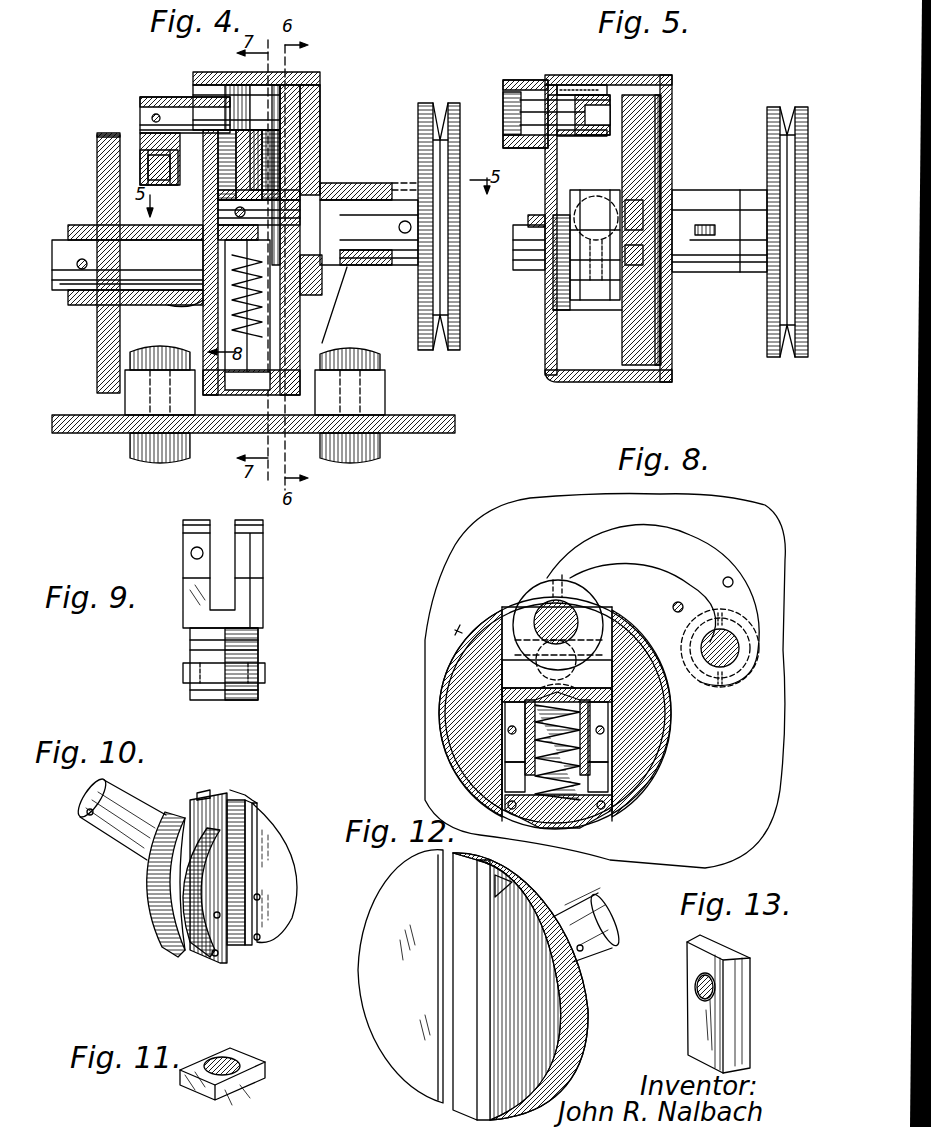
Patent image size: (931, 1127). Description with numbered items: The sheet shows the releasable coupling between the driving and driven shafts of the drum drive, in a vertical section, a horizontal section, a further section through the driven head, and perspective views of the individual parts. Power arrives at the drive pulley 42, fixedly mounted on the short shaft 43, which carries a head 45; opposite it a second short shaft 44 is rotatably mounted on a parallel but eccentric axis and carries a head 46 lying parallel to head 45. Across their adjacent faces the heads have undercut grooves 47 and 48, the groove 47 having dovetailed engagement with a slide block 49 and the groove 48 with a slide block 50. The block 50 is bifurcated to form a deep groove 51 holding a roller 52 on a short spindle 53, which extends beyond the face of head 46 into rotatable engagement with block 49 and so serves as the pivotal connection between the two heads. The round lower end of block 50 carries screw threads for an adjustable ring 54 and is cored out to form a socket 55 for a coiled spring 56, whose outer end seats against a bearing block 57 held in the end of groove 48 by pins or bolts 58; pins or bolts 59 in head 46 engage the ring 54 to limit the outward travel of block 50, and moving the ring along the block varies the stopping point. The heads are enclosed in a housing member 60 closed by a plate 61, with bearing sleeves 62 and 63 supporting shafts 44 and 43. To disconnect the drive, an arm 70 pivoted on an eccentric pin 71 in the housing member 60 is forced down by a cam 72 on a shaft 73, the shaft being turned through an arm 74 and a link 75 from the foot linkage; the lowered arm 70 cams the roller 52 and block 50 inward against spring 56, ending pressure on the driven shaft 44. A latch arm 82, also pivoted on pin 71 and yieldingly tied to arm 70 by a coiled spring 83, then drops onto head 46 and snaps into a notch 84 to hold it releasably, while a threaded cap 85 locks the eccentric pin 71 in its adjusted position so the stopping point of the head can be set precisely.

In FIG. 4, the drive pulley 42 is at (420, 135).
In FIG. 5, the drive pulley 42 is at (770, 158).
In FIG. 4, the short shaft 43 is at (360, 183).
In FIG. 5, the short shaft 43 is at (778, 200).
In FIG. 12, the short shaft 43 is at (575, 910).
In FIG. 4, the second short shaft 44 is at (66, 250).
In FIG. 5, the second short shaft 44 is at (529, 242).
In FIG. 8, the second short shaft 44 is at (575, 680).
In FIG. 10, the second short shaft 44 is at (125, 850).
In FIG. 4, the head 45 is at (305, 300).
In FIG. 5, the head 45 is at (660, 322).
In FIG. 12, the head 45 is at (368, 982).
In FIG. 4, the head 46 is at (206, 300).
In FIG. 5, the head 46 is at (557, 297).
In FIG. 8, the head 46 is at (470, 650).
In FIG. 10, the head 46 is at (140, 905).
In FIG. 4, the undercut groove 47 is at (284, 90).
In FIG. 5, the undercut groove 47 is at (660, 265).
In FIG. 12, the undercut groove 47 is at (455, 935).
In FIG. 8, the undercut groove 48 is at (625, 676).
In FIG. 10, the undercut groove 48 is at (263, 813).
In FIG. 4, the slide block 49 is at (322, 283).
In FIG. 5, the slide block 49 is at (645, 215).
In FIG. 13, the slide block 49 is at (700, 1033).
In FIG. 4, the slide block 50 is at (328, 188).
In FIG. 5, the slide block 50 is at (596, 200).
In FIG. 8, the slide block 50 is at (615, 650).
In FIG. 9, the slide block 50 is at (170, 613).
In FIG. 4, the deep groove 51 is at (249, 165).
In FIG. 8, the deep groove 51 is at (512, 668).
In FIG. 9, the deep groove 51 is at (230, 595).
In FIG. 4, the roller 52 is at (300, 228).
In FIG. 5, the roller 52 is at (592, 290).
In FIG. 8, the roller 52 is at (530, 590).
In FIG. 4, the short spindle 53 is at (215, 252).
In FIG. 8, the short spindle 53 is at (540, 625).
In FIG. 4, the ring 54 is at (170, 305).
In FIG. 8, the ring 54 is at (610, 752).
In FIG. 9, the ring 54 is at (200, 665).
In FIG. 8, the socket 55 is at (590, 770).
In FIG. 9, the socket 55 is at (198, 683).
In FIG. 4, the coiled spring 56 is at (290, 318).
In FIG. 8, the coiled spring 56 is at (590, 810).
In FIG. 4, the bearing block 57 is at (262, 378).
In FIG. 8, the bearing block 57 is at (545, 822).
In FIG. 11, the bearing block 57 is at (248, 1058).
In FIG. 8, the pins or bolts 58 is at (510, 812).
In FIG. 8, the pins or bolts 59 is at (510, 728).
In FIG. 4, the housing member 60 is at (196, 76).
In FIG. 5, the housing member 60 is at (547, 360).
In FIG. 4, the plate 61 is at (322, 86).
In FIG. 5, the plate 61 is at (672, 93).
In FIG. 4, the bearing sleeve 62 is at (102, 218).
In FIG. 4, the bearing sleeve 63 is at (380, 183).
In FIG. 4, the arm 70 is at (243, 122).
In FIG. 5, the arm 70 is at (594, 98).
In FIG. 5, the eccentric pin 71 is at (540, 86).
In FIG. 8, the eccentric pin 71 is at (745, 650).
In FIG. 4, the cam 72 is at (234, 85).
In FIG. 4, the shaft 73 is at (142, 105).
In FIG. 4, the arm 74 is at (142, 150).
In FIG. 4, the link 75 is at (140, 172).
In FIG. 5, the latch arm 82 is at (570, 86).
In FIG. 8, the latch arm 82 is at (695, 560).
In FIG. 5, the coiled spring 83 is at (578, 140).
In FIG. 8, the notch 84 is at (530, 595).
In FIG. 10, the notch 84 is at (200, 792).
In FIG. 5, the cap 85 is at (506, 85).